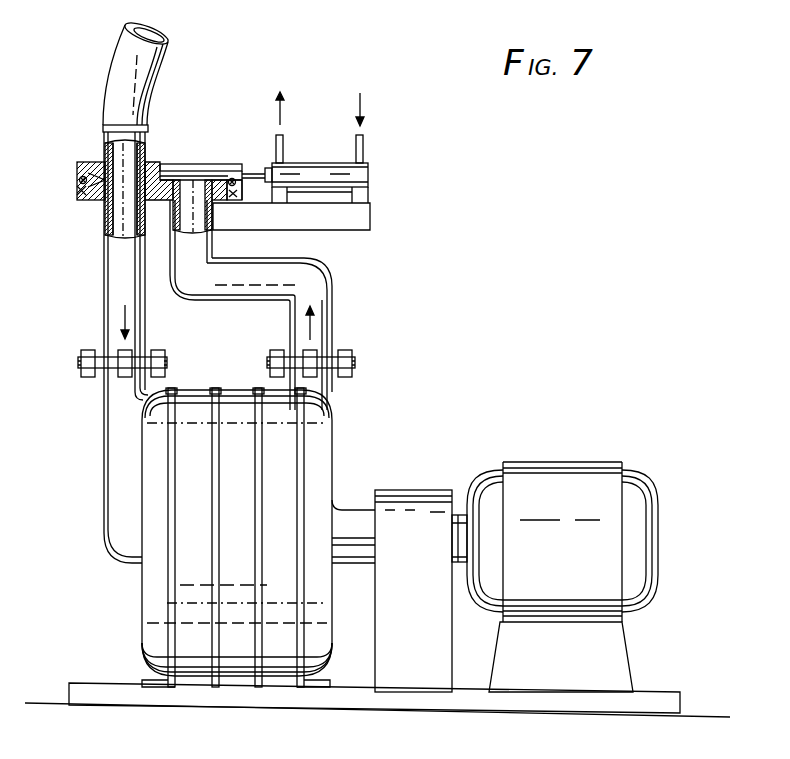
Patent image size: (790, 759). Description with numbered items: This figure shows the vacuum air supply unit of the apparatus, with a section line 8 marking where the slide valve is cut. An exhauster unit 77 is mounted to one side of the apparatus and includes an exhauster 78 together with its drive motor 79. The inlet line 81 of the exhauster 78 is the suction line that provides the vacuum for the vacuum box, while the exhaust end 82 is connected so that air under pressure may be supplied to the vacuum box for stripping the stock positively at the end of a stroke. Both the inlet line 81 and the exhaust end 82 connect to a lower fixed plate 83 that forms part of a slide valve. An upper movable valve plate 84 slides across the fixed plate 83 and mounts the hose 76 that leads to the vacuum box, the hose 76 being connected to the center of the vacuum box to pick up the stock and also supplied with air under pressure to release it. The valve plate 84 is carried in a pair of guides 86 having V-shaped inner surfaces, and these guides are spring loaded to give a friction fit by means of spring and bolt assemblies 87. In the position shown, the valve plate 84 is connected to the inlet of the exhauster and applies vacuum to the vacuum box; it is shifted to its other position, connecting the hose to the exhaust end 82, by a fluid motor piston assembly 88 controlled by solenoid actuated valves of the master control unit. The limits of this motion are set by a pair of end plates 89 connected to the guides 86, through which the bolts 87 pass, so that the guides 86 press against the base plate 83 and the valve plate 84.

The hose 76 is at (122, 70).
The exhauster unit 77 is at (349, 445).
The exhauster 78 is at (163, 625).
The drive motor 79 is at (573, 477).
The inlet line 81 is at (113, 309).
The exhaust end 82 is at (297, 333).
The lower fixed plate 83 is at (100, 202).
The upper movable valve plate 84 is at (105, 172).
The guides 86 is at (208, 165).
The spring and bolt assemblies 87 is at (80, 180).
The fluid motor piston assembly 88 is at (357, 176).
The end plates 89 is at (82, 190).
The section line 8- 8 is at (157, 233).